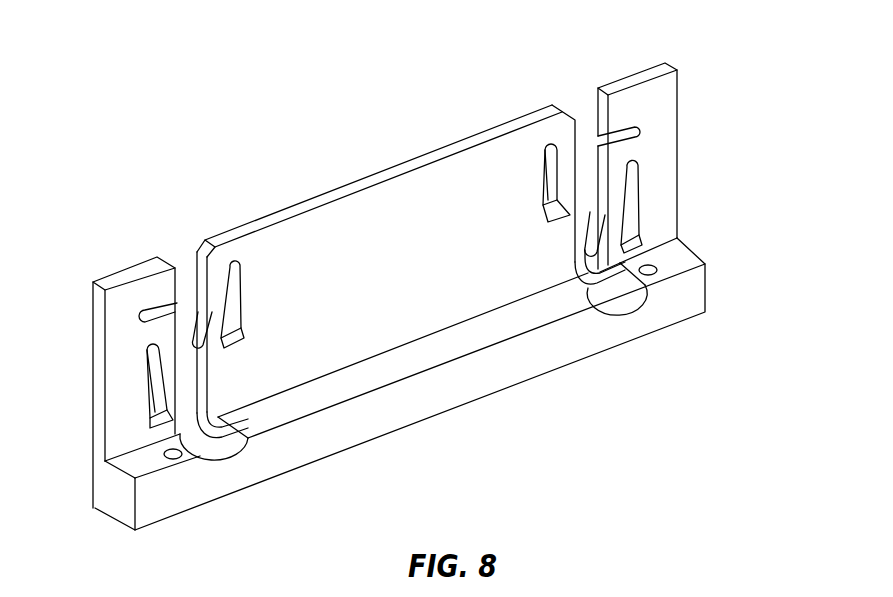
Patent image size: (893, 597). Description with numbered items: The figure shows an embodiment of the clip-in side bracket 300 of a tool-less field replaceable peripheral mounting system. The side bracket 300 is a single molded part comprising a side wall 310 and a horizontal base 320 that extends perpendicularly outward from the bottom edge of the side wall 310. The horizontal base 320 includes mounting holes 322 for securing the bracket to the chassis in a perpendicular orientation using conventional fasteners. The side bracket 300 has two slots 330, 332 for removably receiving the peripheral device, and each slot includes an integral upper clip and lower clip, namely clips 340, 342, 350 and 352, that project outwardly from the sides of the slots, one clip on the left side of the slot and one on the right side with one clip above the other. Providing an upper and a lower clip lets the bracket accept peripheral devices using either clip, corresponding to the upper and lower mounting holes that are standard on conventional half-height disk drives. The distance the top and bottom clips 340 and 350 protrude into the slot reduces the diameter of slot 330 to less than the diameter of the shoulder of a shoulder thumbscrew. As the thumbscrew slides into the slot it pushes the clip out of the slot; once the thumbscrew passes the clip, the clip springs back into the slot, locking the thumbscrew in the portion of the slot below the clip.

The side bracket 300 is at (135, 142).
The side wall 310 is at (350, 224).
The horizontal base 320 is at (448, 388).
The mounting holes 322 is at (185, 456).
The slot 330 is at (185, 263).
The slot 332 is at (587, 122).
The upper clip 340 is at (227, 340).
The upper clip 342 is at (570, 192).
The lower clip 350 is at (171, 397).
The lower clip 352 is at (613, 217).